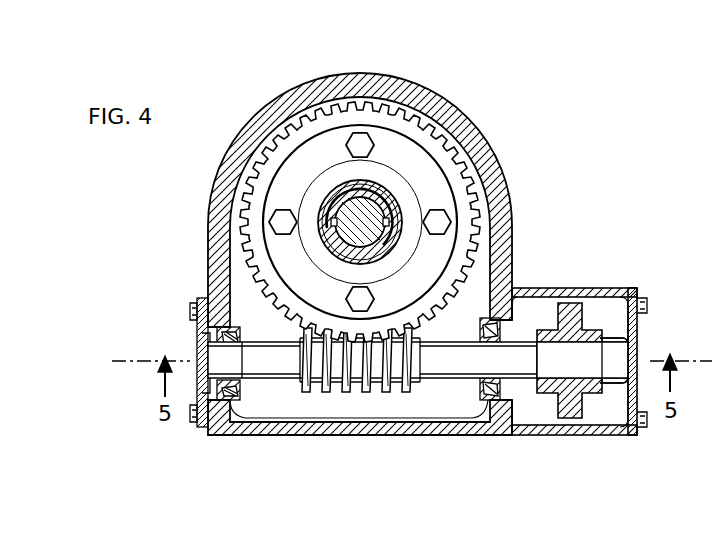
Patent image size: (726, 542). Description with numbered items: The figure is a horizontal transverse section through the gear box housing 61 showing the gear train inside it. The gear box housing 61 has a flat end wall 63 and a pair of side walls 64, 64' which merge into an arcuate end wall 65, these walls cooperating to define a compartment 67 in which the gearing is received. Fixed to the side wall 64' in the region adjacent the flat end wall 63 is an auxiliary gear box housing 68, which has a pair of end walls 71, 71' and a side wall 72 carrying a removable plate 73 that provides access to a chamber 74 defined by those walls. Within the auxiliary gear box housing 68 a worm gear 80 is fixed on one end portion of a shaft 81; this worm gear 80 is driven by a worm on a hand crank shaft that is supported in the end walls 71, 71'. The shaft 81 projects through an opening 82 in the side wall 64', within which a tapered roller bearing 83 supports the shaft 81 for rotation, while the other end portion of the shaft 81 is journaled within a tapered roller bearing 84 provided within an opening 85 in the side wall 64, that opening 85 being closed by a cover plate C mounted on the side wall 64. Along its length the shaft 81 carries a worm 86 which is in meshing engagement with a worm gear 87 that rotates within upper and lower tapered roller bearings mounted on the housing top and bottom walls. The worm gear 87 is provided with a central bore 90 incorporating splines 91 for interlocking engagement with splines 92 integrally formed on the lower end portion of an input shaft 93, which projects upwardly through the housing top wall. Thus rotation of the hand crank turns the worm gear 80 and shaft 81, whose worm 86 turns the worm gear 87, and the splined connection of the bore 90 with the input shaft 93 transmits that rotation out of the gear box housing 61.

The gear box housing 61 is at (188, 186).
The flat end wall 63 is at (297, 437).
The side wall 64 is at (351, 200).
The side wall 64' is at (386, 200).
The arcuate end wall 65 is at (432, 92).
The compartment 67 is at (430, 412).
The auxiliary gear box housing 68 is at (624, 272).
The end wall 71 is at (574, 280).
The end wall 71' is at (574, 448).
The side wall 72 is at (641, 298).
The removable plate 73 is at (640, 333).
The chamber 74 is at (601, 416).
The worm gear 80 is at (578, 330).
The shaft 81 is at (447, 366).
The opening 82 is at (486, 325).
The tapered roller bearing 83 is at (500, 332).
The tapered roller bearing 84 is at (232, 332).
The opening 85 is at (236, 342).
The worm 86 is at (376, 388).
The worm gear 87 is at (447, 193).
The central bore 90 is at (381, 254).
The splines 91 is at (384, 214).
The splines 92 is at (397, 238).
The input shaft 93 is at (332, 204).
The cover plate C is at (196, 330).